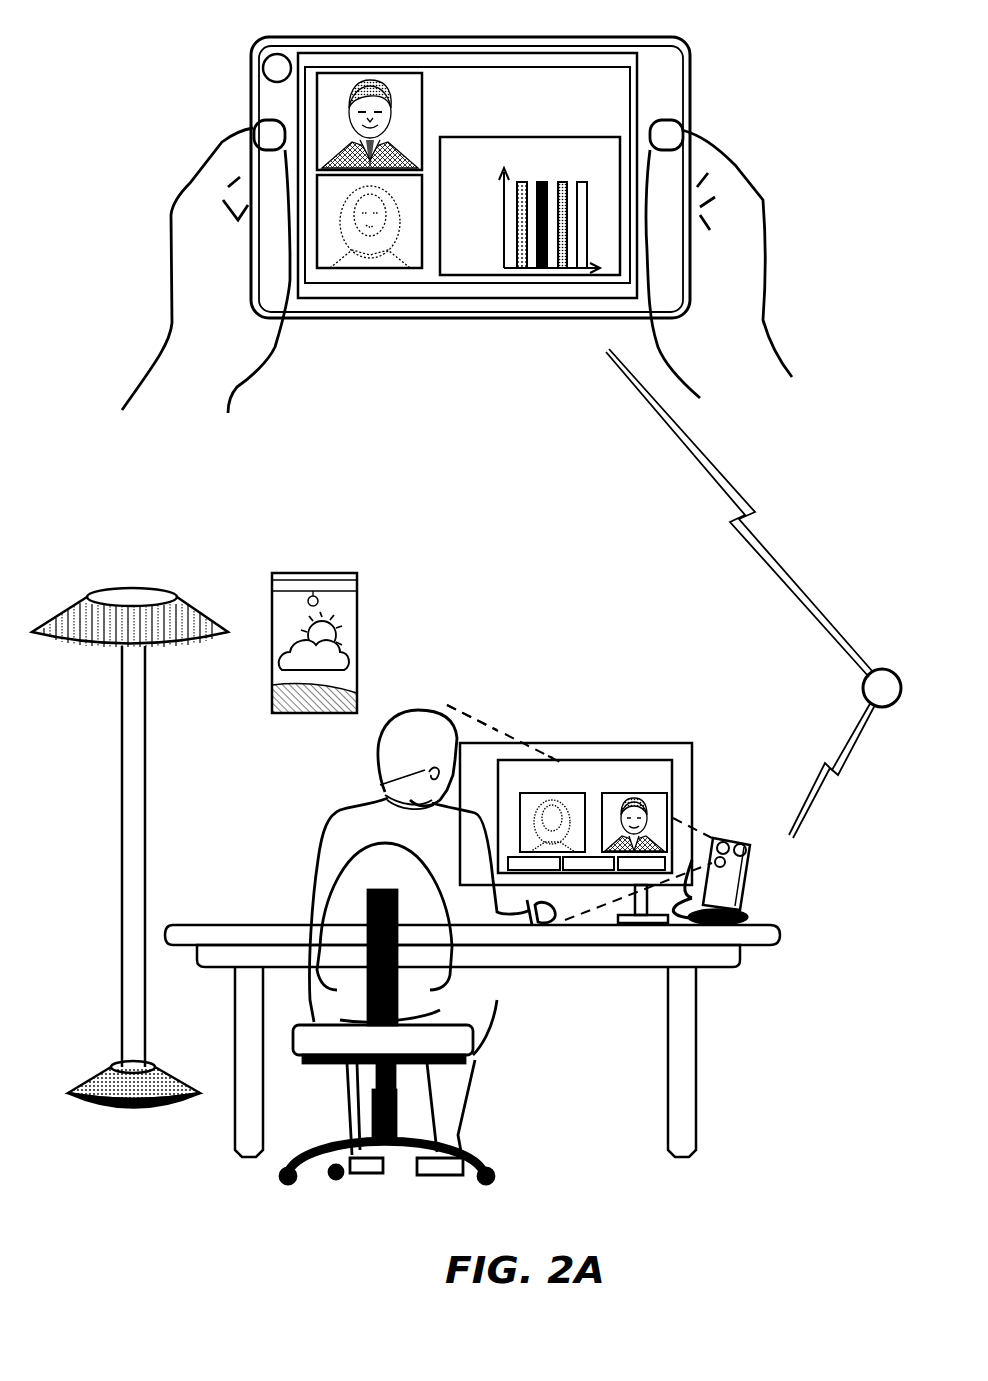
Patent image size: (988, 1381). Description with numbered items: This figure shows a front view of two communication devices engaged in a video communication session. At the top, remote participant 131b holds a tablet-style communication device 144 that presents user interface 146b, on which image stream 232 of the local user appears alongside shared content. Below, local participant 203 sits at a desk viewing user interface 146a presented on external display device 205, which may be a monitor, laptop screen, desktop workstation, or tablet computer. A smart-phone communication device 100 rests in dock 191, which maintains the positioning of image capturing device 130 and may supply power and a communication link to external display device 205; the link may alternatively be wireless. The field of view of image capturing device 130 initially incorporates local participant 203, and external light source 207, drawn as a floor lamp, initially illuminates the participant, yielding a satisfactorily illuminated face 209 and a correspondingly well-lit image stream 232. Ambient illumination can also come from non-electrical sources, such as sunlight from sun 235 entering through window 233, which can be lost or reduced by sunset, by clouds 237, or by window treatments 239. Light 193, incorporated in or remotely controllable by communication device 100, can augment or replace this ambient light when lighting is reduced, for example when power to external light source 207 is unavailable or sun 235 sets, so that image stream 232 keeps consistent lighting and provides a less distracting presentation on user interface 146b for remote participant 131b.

The second communication device 144 is at (251, 41).
The user interface 146b is at (474, 174).
The remote participant 131b is at (190, 193).
The external light source 207 is at (145, 723).
The window 233 is at (272, 607).
The window treatments 239 is at (343, 591).
The sun 235 is at (335, 622).
The clouds 237 is at (337, 676).
The local participant 203 is at (342, 807).
The external display device 205 is at (618, 743).
The user interface 146a is at (594, 781).
The image stream 232 is at (657, 800).
The satisfactorily illuminated face 209 is at (463, 757).
The image capturing device 130 is at (718, 838).
The light 193 is at (748, 845).
The communication device 100 is at (770, 827).
The dock 191 is at (752, 918).